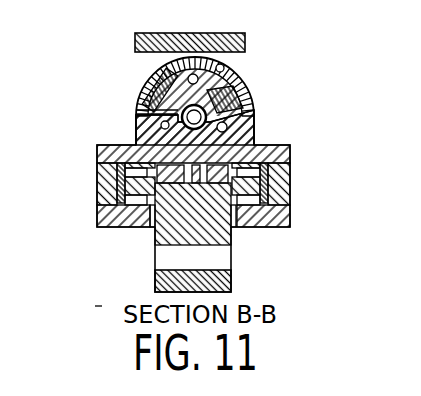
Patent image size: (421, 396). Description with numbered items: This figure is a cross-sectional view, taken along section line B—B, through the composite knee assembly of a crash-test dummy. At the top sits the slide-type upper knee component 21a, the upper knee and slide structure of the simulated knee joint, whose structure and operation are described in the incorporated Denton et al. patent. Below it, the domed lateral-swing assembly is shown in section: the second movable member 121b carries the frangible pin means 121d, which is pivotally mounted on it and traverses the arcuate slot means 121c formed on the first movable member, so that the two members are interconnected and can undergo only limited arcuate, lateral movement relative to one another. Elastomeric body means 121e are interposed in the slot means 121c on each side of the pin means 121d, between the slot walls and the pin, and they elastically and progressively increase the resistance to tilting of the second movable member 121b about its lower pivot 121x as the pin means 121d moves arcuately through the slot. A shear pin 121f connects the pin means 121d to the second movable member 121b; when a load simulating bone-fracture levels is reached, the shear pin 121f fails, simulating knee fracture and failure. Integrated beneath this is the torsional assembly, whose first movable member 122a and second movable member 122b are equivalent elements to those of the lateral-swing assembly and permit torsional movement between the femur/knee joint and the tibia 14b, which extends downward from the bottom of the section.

The slide-type upper knee component 21a is at (245, 33).
The first movable member 122a is at (290, 210).
The second movable member 122b is at (175, 235).
The tibia 14b is at (231, 280).
The frangible pin means 121d is at (243, 95).
The arcuate slot means 121c is at (157, 82).
The lower pivot 121x is at (133, 140).
The elastomeric body means 121e is at (157, 88).
The second movable member 121b is at (143, 108).
The shear pin 121f is at (213, 66).